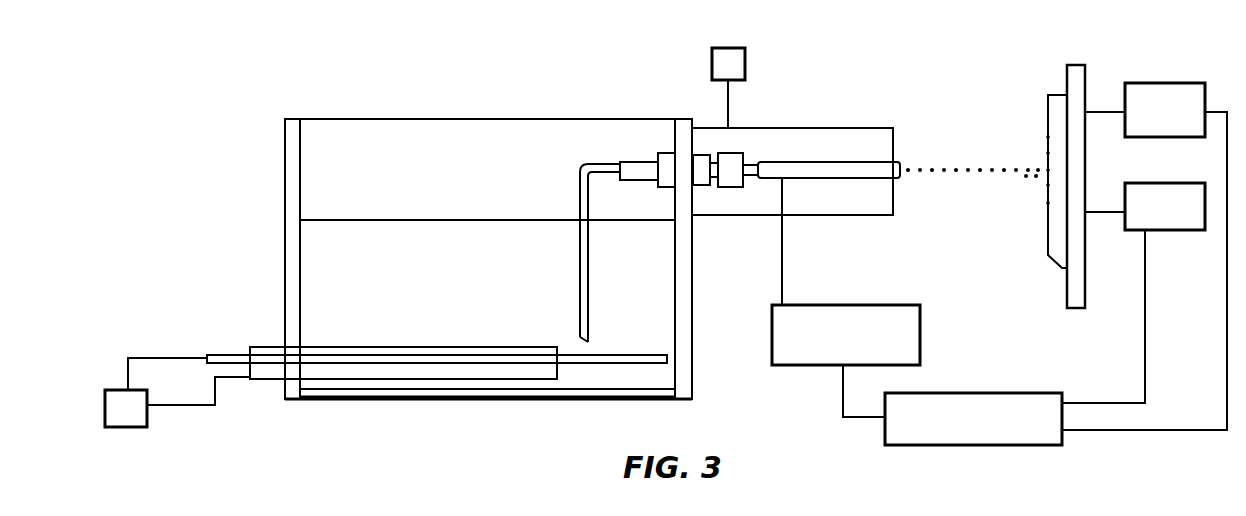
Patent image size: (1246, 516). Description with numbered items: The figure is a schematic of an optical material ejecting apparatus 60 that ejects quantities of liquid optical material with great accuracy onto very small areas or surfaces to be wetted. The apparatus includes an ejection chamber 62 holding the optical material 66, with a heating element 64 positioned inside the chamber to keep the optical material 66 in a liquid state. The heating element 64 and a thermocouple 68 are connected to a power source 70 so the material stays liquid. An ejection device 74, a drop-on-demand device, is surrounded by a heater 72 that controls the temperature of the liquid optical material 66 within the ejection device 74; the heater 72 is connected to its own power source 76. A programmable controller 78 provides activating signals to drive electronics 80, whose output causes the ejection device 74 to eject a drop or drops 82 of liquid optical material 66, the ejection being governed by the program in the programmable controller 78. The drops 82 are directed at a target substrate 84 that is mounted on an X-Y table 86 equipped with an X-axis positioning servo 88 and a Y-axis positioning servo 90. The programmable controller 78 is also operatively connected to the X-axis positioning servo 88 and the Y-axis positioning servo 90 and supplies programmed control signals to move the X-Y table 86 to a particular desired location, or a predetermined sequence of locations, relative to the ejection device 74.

The optical material ejecting apparatus 60 is at (236, 152).
The ejection chamber 62 is at (508, 110).
The heating element 64 is at (370, 380).
The optical material 66 is at (487, 258).
The thermocouple 68 is at (225, 355).
The power source 70 is at (113, 390).
The heater 72 is at (815, 128).
The ejection device 74 is at (866, 162).
The power source 76 is at (745, 68).
The programmable controller 78 is at (885, 432).
The drive electronics 80 is at (858, 305).
The drops 82 is at (987, 170).
The target substrate 84 is at (1048, 95).
The X-Y table 86 is at (1085, 72).
The X-axis positioning servo 88 is at (1195, 83).
The Y-axis positioning servo 90 is at (1155, 183).